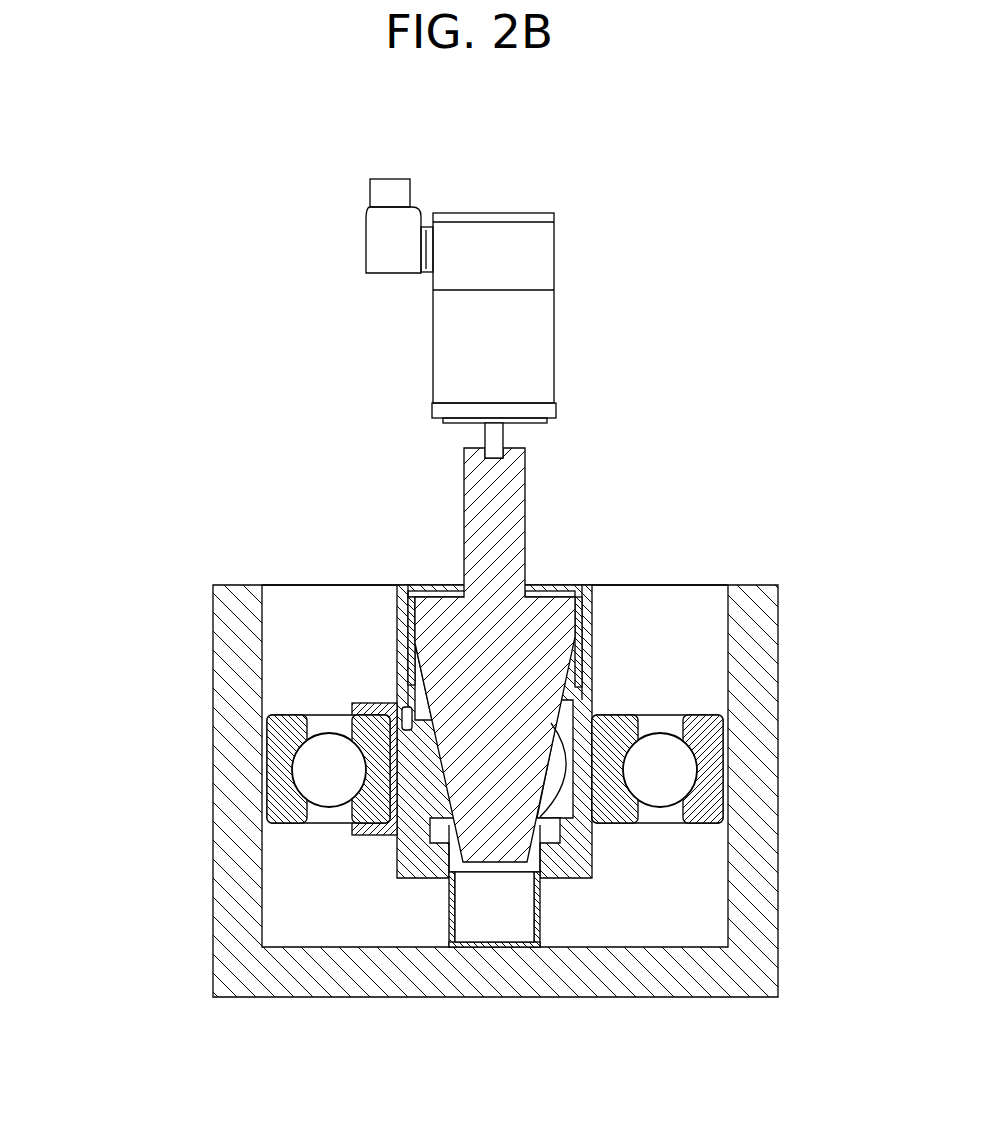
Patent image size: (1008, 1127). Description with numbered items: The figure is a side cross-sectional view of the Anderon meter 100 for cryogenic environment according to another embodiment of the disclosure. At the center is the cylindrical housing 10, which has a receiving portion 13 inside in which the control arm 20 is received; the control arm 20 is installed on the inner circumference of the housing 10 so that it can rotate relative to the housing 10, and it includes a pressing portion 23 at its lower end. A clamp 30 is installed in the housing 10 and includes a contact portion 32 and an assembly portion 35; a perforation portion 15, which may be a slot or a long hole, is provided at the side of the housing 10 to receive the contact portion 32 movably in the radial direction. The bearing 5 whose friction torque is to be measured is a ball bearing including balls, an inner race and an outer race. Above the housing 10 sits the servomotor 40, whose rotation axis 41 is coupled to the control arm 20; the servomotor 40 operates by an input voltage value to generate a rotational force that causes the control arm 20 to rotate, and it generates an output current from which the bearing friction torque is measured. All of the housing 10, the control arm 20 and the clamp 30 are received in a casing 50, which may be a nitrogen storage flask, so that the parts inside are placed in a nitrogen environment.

The bearing 5 is at (708, 733).
The housing 10 is at (400, 623).
The receiving portion 13 is at (425, 705).
The perforation portion 15 is at (407, 712).
The control arm 20 is at (515, 547).
The pressing portion 23 is at (450, 786).
The clamp 30 is at (98, 783).
The contact portion 32 is at (378, 828).
The assembly portion 35 is at (415, 770).
The servomotor 40 is at (538, 318).
The rotation axis 41 is at (492, 437).
The casing 50 is at (760, 860).
The Anderon meter for cryogenic environment 100 is at (575, 484).